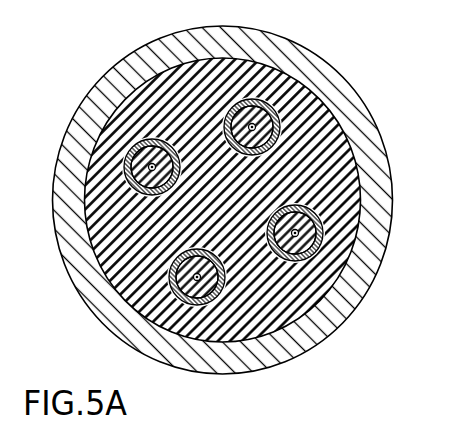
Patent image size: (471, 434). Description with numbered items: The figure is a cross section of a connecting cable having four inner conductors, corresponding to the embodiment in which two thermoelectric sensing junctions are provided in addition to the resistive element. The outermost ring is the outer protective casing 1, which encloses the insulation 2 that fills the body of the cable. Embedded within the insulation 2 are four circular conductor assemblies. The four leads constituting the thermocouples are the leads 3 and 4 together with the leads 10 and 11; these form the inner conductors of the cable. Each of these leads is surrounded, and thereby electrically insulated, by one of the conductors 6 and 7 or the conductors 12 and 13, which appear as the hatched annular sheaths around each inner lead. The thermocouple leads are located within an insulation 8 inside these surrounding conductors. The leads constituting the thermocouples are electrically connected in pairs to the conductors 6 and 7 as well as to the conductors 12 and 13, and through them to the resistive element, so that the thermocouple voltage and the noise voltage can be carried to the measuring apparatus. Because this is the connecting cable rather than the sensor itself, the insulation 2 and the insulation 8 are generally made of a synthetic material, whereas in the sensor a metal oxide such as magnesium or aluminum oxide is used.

The outer protective casing 1 is at (374, 148).
The insulation 2 is at (348, 188).
The wire 3 is at (177, 147).
The wire 4 is at (172, 286).
The conductor 6 is at (224, 200).
The conductor 7 is at (184, 258).
The insulation 8 is at (178, 179).
The lead 10 is at (281, 116).
The lead 11 is at (331, 257).
The conductor 12 is at (318, 86).
The conductor 13 is at (277, 258).